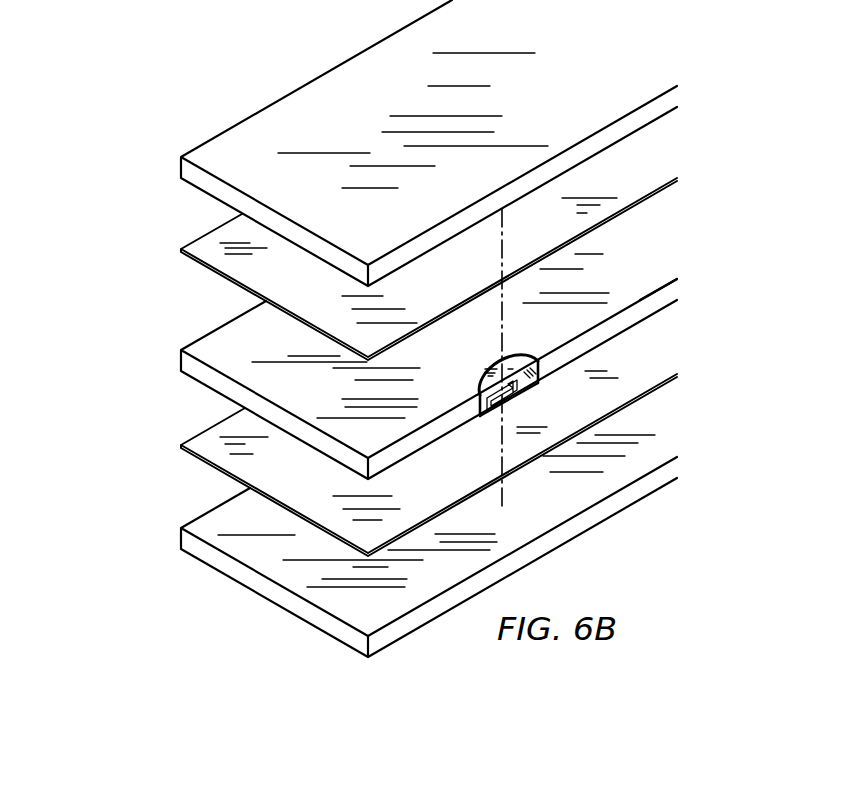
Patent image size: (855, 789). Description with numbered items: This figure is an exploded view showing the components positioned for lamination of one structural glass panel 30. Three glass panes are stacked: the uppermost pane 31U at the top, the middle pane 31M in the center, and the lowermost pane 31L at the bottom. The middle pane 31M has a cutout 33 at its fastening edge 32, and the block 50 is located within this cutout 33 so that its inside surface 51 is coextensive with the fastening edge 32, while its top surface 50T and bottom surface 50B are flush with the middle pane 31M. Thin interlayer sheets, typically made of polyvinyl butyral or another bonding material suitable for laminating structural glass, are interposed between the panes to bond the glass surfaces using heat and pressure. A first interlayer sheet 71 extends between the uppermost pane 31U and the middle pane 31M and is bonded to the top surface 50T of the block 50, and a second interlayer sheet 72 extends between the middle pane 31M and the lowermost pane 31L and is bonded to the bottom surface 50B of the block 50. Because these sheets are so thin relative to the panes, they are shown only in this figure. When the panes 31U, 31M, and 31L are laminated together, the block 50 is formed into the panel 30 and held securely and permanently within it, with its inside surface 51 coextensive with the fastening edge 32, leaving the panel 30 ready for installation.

The panel 30 is at (107, 147).
The uppermost pane 31U is at (181, 168).
The middle pane 31M is at (181, 362).
The lowermost pane 31L is at (181, 545).
The second interlayer sheet 72 is at (198, 260).
The first interlayer sheet 71 is at (200, 458).
The fastening edge 32 is at (661, 314).
The cutout 33 is at (475, 362).
The block 50 is at (502, 393).
The top surface 50T is at (517, 360).
The bottom surface 50B is at (490, 418).
The inside surface 51 is at (525, 390).